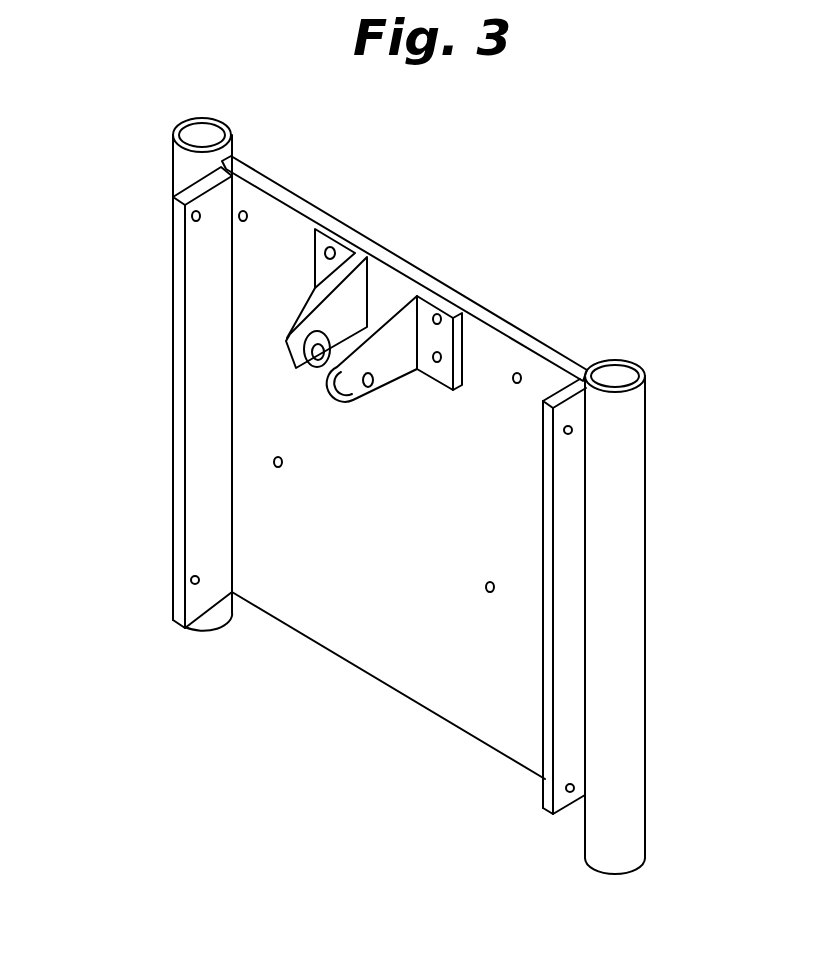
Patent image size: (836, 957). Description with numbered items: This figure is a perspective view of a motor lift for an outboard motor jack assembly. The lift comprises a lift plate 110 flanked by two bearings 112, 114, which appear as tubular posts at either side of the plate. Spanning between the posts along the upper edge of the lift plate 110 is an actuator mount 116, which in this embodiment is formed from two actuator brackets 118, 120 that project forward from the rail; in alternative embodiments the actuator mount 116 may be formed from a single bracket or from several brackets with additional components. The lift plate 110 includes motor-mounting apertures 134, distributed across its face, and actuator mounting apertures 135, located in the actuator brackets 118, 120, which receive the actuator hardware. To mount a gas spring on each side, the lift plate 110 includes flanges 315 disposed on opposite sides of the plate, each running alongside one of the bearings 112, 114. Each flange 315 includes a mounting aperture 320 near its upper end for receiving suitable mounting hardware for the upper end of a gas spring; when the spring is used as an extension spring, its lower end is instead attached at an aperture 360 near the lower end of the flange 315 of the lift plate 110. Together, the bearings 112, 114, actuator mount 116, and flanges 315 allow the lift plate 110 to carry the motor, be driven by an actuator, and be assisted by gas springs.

The lift plate 110 is at (498, 345).
The bearing 112 is at (623, 378).
The bearing 114 is at (172, 152).
The actuator mount 116 is at (422, 247).
The actuator bracket 118 is at (322, 228).
The actuator bracket 120 is at (462, 315).
The motor-mounting apertures 134 is at (245, 223).
The actuator mounting apertures 135 is at (340, 250).
The flange 315 is at (187, 363).
The mounting aperture 320 is at (191, 218).
The aperture 360 is at (192, 582).